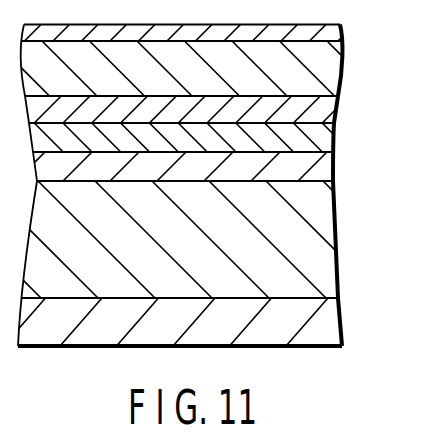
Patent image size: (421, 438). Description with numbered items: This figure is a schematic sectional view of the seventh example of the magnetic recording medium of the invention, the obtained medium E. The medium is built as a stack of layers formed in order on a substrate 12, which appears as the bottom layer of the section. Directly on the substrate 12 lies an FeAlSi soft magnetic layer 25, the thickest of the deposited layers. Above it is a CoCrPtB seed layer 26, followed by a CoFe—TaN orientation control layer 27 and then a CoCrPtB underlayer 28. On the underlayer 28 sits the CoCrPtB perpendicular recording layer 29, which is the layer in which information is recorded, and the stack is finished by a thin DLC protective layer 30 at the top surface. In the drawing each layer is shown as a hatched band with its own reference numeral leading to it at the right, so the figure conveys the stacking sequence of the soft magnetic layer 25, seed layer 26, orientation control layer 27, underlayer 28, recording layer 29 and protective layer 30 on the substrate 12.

The substrate 12 is at (326, 324).
The FeAlSi soft magnetic layer 25 is at (326, 244).
The CoCrPtB seed layer 26 is at (326, 171).
The CoFe—TaN orientation control layer 27 is at (326, 143).
The CoCrPtB underlayer 28 is at (326, 112).
The CoCrPtB perpendicular recording layer 29 is at (326, 72).
The DLC protective layer 30 is at (341, 28).